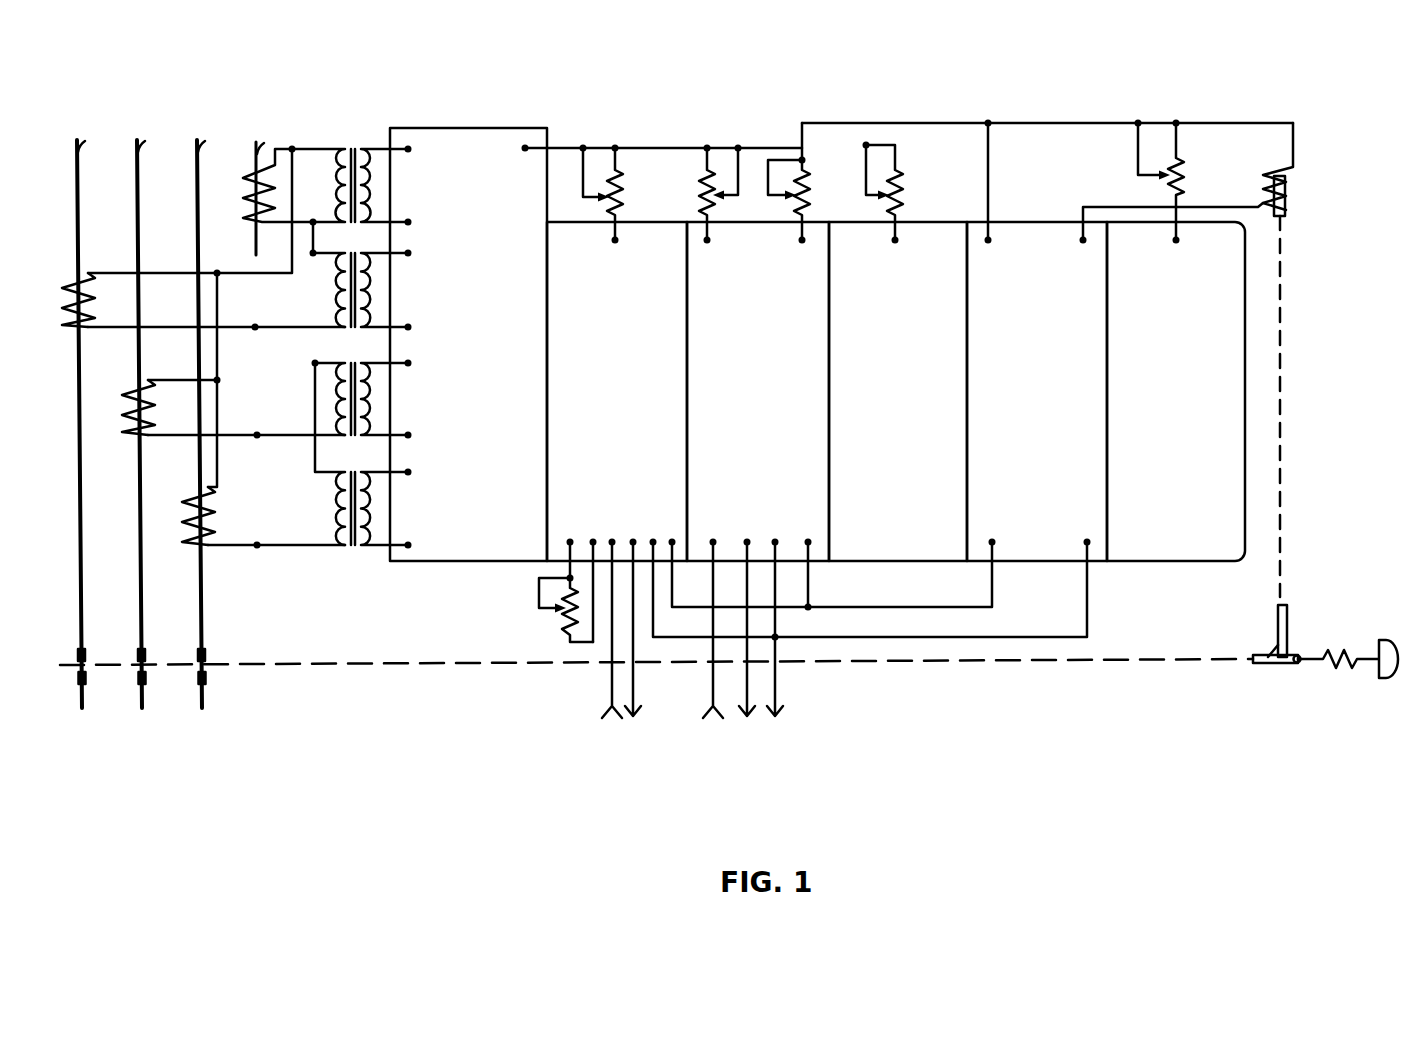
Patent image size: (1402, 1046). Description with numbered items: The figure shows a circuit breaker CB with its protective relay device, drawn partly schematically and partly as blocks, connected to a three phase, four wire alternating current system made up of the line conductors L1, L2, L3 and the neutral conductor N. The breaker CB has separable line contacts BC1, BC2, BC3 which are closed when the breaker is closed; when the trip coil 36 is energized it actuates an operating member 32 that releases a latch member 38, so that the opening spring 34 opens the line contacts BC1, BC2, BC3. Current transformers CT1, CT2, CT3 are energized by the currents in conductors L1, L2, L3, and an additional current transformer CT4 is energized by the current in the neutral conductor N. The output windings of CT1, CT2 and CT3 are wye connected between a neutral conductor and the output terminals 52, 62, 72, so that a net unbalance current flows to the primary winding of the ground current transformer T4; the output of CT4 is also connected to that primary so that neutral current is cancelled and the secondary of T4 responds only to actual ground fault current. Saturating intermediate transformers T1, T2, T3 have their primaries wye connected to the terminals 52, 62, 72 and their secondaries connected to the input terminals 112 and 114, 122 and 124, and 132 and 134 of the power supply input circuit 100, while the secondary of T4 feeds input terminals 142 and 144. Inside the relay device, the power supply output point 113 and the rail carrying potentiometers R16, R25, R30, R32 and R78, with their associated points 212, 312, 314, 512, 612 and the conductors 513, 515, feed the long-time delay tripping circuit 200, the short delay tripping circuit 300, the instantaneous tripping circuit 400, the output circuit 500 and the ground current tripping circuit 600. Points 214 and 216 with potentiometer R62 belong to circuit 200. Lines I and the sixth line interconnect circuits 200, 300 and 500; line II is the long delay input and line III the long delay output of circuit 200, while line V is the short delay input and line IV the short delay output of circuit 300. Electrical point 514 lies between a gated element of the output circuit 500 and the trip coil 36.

The line conductor L1 is at (93, 414).
The line conductor L2 is at (152, 414).
The line conductor L3 is at (212, 414).
The neutral conductor N is at (266, 188).
The line contact BC1 is at (77, 655).
The line contact BC2 is at (137, 655).
The line contact BC3 is at (197, 655).
The circuit breaker CB is at (1175, 683).
The current transformer CT1 is at (70, 287).
The current transformer CT2 is at (128, 387).
The current transformer CT3 is at (188, 499).
The current transformer CT4 is at (244, 179).
The intermediate transformer T1 is at (350, 253).
The intermediate transformer T2 is at (350, 363).
The intermediate transformer T3 is at (350, 472).
The ground current transformer T4 is at (350, 143).
The output terminal 52 is at (255, 324).
The output terminal 62 is at (257, 432).
The output terminal 72 is at (257, 542).
The input terminal 112 is at (408, 256).
The input terminal 114 is at (408, 324).
The input terminal 122 is at (408, 366).
The input terminal 124 is at (408, 432).
The input terminal 132 is at (408, 475).
The input terminal 134 is at (408, 542).
The input terminal 142 is at (408, 152).
The input terminal 144 is at (408, 219).
The power supply input circuit 100 is at (398, 563).
The power supply output terminal 113 is at (522, 152).
The potentiometer R16 is at (620, 197).
The potentiometer R25 is at (698, 197).
The potentiometer R30 is at (808, 197).
The potentiometer R32 is at (902, 197).
The potentiometer R78 is at (1182, 181).
The long time delay input terminal 212 is at (619, 240).
The short delay input terminal 312 is at (711, 240).
The short delay input terminal 314 is at (800, 240).
The output circuit terminal 512 is at (992, 240).
The electrical point 514 is at (1079, 240).
The ground current input terminal 612 is at (1180, 240).
The conductor 513 is at (958, 123).
The conductor 515 is at (1014, 123).
The trip coil 36 is at (1289, 198).
The long-time delay tripping circuit 200 is at (553, 565).
The short delay tripping circuit 300 is at (836, 576).
The instantaneous tripping circuit 400 is at (918, 576).
The output circuit 500 is at (1108, 576).
The ground current tripping circuit 600 is at (1231, 576).
The long time delay terminal 214 is at (570, 540).
The long time delay terminal 216 is at (594, 540).
The potentiometer R62 is at (562, 627).
The line I is at (771, 723).
The long delay input line II is at (606, 723).
The long delay output circuit III is at (644, 741).
The short delay output line IV is at (740, 723).
The short delay input line V is at (721, 723).
The operating member 32 is at (1290, 630).
The opening spring 34 is at (1333, 650).
The latch member 38 is at (1272, 665).